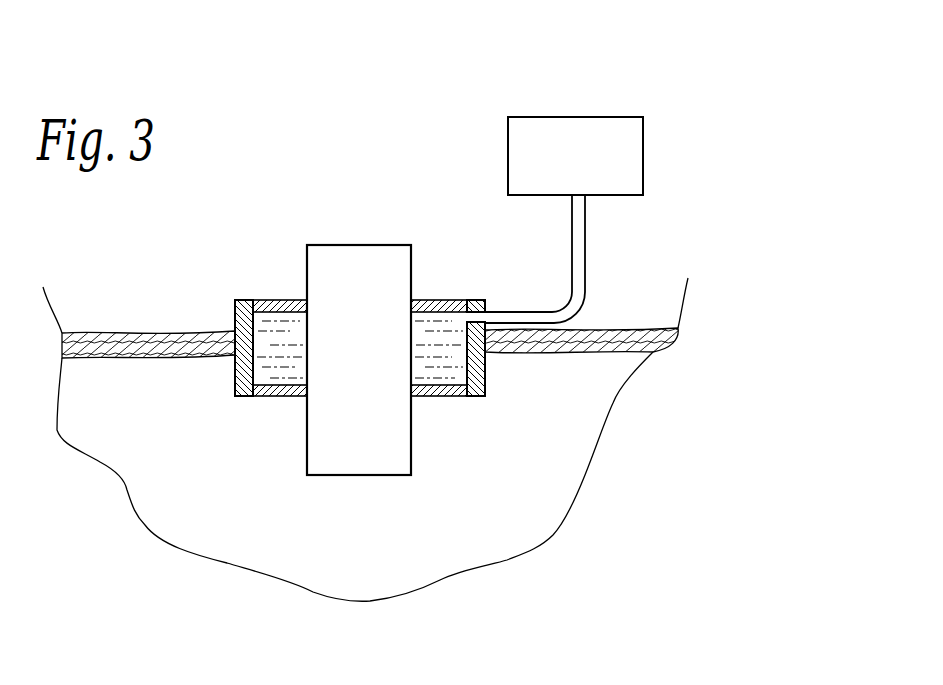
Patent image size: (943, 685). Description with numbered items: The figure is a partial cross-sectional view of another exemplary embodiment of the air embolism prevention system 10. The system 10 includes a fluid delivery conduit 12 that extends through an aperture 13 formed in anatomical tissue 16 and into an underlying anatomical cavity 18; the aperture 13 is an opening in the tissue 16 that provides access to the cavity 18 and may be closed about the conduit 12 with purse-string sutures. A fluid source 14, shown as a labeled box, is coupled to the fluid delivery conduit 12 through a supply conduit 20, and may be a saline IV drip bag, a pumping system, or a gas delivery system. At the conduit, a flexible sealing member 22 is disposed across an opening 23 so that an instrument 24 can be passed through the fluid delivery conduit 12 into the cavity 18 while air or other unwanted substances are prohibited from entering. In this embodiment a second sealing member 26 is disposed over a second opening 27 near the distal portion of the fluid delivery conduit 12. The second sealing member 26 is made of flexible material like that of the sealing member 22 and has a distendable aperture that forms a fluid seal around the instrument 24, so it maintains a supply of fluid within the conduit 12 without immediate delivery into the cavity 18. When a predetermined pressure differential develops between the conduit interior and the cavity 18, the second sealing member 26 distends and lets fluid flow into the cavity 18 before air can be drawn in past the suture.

The air embolism prevention system 10 is at (622, 92).
The fluid delivery conduit 12 is at (233, 317).
The aperture 13 is at (235, 355).
The fluid source 14 is at (643, 173).
The anatomical tissue 16 is at (608, 327).
The anatomical cavity 18 is at (514, 497).
The supply conduit 20 is at (587, 270).
The flexible sealing member 22 is at (437, 300).
The opening 23 is at (464, 300).
The instrument 24 is at (307, 277).
The second sealing member 26 is at (270, 396).
The second opening 27 is at (438, 396).